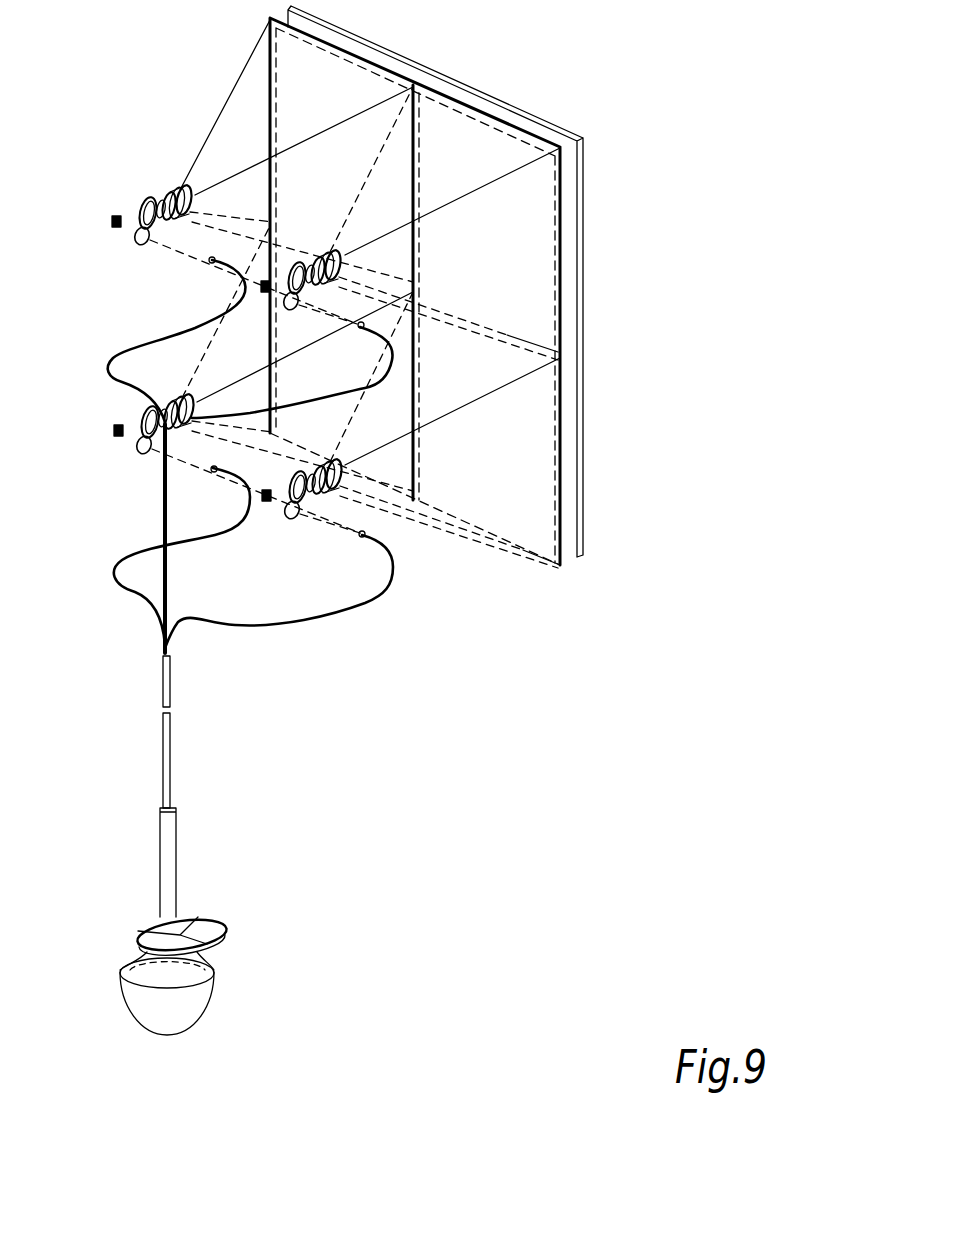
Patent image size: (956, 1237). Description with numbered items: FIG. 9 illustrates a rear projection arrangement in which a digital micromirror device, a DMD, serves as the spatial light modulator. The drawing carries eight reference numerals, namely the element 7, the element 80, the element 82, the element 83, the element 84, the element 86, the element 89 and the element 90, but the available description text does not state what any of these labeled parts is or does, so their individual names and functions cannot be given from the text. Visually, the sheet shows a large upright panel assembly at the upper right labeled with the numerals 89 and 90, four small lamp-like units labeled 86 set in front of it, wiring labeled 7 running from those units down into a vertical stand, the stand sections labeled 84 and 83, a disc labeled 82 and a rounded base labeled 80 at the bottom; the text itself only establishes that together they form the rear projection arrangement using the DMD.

The cable 7 is at (255, 488).
The base weight 80 is at (210, 1005).
The support disc 82 is at (227, 933).
The lower tube 83 is at (177, 858).
The telescopic rod 84 is at (172, 767).
The light source 86 is at (355, 540).
The front panel 89 is at (562, 266).
The back panel 90 is at (580, 246).